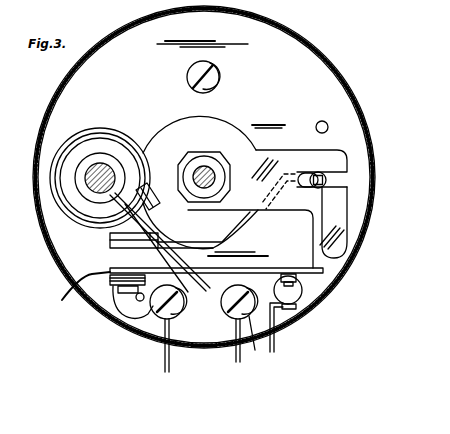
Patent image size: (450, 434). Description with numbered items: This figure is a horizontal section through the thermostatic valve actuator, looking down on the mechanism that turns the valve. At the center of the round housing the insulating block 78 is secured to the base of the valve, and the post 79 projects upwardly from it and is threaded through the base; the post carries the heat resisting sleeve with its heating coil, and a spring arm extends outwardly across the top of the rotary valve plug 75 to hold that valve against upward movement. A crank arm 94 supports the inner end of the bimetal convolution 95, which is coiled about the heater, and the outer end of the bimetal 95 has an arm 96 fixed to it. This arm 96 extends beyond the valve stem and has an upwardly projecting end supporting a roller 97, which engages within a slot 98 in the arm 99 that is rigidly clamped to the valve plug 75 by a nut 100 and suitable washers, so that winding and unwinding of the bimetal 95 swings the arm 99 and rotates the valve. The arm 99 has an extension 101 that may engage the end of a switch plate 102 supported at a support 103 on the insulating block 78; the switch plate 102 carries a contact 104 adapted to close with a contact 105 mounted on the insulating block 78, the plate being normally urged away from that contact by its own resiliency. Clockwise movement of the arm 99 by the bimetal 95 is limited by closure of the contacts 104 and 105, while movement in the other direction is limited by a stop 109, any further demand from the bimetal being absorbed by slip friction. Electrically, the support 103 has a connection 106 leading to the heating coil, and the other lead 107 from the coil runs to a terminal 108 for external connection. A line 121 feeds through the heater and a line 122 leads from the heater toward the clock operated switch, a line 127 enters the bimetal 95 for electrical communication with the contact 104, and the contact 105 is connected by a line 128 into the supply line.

The rotary valve plug 75 is at (215, 177).
The insulating block 78 is at (313, 75).
The post 79 is at (100, 163).
The crank arm 94 is at (155, 202).
The bimetal convolution 95 is at (138, 147).
The arm 96 is at (240, 235).
The roller 97 is at (327, 180).
The slot 98 is at (332, 232).
The arm 99 is at (290, 152).
The nut 100 is at (228, 143).
The extension 101 is at (325, 256).
The switch plate 102 is at (314, 271).
The support 103 is at (138, 307).
The contact 104 is at (287, 273).
The contact 105 is at (299, 301).
The connection 106 is at (137, 256).
The lead 107 is at (217, 304).
The terminal 108 is at (255, 352).
The stop 109 is at (324, 120).
The line 121 is at (163, 366).
The line 122 is at (234, 362).
The line 127 is at (70, 305).
The line 128 is at (272, 353).